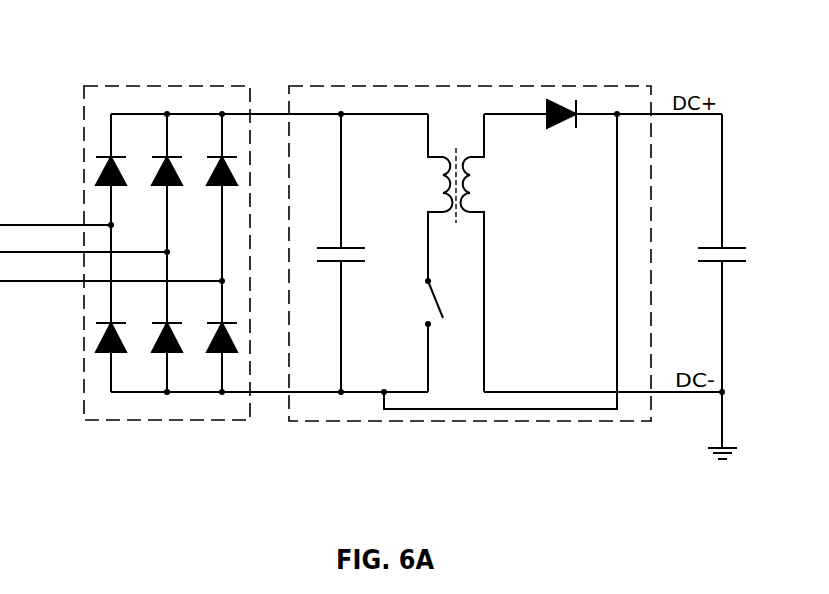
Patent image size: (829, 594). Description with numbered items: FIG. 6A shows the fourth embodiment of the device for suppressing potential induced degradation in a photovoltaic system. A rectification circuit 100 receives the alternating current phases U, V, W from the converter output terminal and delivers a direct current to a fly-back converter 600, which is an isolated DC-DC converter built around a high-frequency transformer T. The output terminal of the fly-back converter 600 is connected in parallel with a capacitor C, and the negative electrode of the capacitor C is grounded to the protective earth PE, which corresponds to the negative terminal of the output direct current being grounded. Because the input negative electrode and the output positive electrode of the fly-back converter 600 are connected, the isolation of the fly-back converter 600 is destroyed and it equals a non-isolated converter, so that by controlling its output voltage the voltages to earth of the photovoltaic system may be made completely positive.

The rectification circuit 100 is at (125, 240).
The fly-back converter 600 is at (486, 241).
The AC input phase U is at (57, 215).
The AC input phase V is at (85, 243).
The AC input phase W is at (112, 272).
The transformer T is at (456, 253).
The capacitor C is at (733, 253).
The protective earth ground PE is at (736, 425).